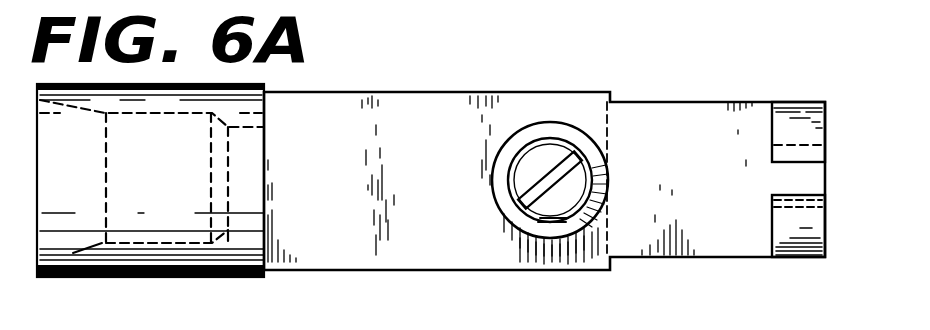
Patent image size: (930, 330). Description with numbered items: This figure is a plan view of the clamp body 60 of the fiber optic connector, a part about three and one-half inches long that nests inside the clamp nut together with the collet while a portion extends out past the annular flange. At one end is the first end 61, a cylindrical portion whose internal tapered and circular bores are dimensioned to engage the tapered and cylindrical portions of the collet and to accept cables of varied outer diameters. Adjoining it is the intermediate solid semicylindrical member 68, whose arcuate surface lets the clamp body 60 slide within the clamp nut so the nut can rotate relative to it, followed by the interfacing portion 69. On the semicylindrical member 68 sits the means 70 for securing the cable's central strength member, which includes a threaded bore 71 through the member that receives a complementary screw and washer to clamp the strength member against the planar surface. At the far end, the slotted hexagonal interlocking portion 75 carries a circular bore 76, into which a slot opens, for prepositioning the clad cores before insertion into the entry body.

The clamp body 60 is at (488, 278).
The first end 61 is at (165, 278).
The semicylindrical member 68 is at (385, 88).
The interfacing portion 69 is at (683, 104).
The means for securing the central strength member 70 is at (568, 135).
The threaded bore 71 is at (805, 163).
The interlocking portion 75 is at (828, 125).
The circular bore 76 is at (827, 226).